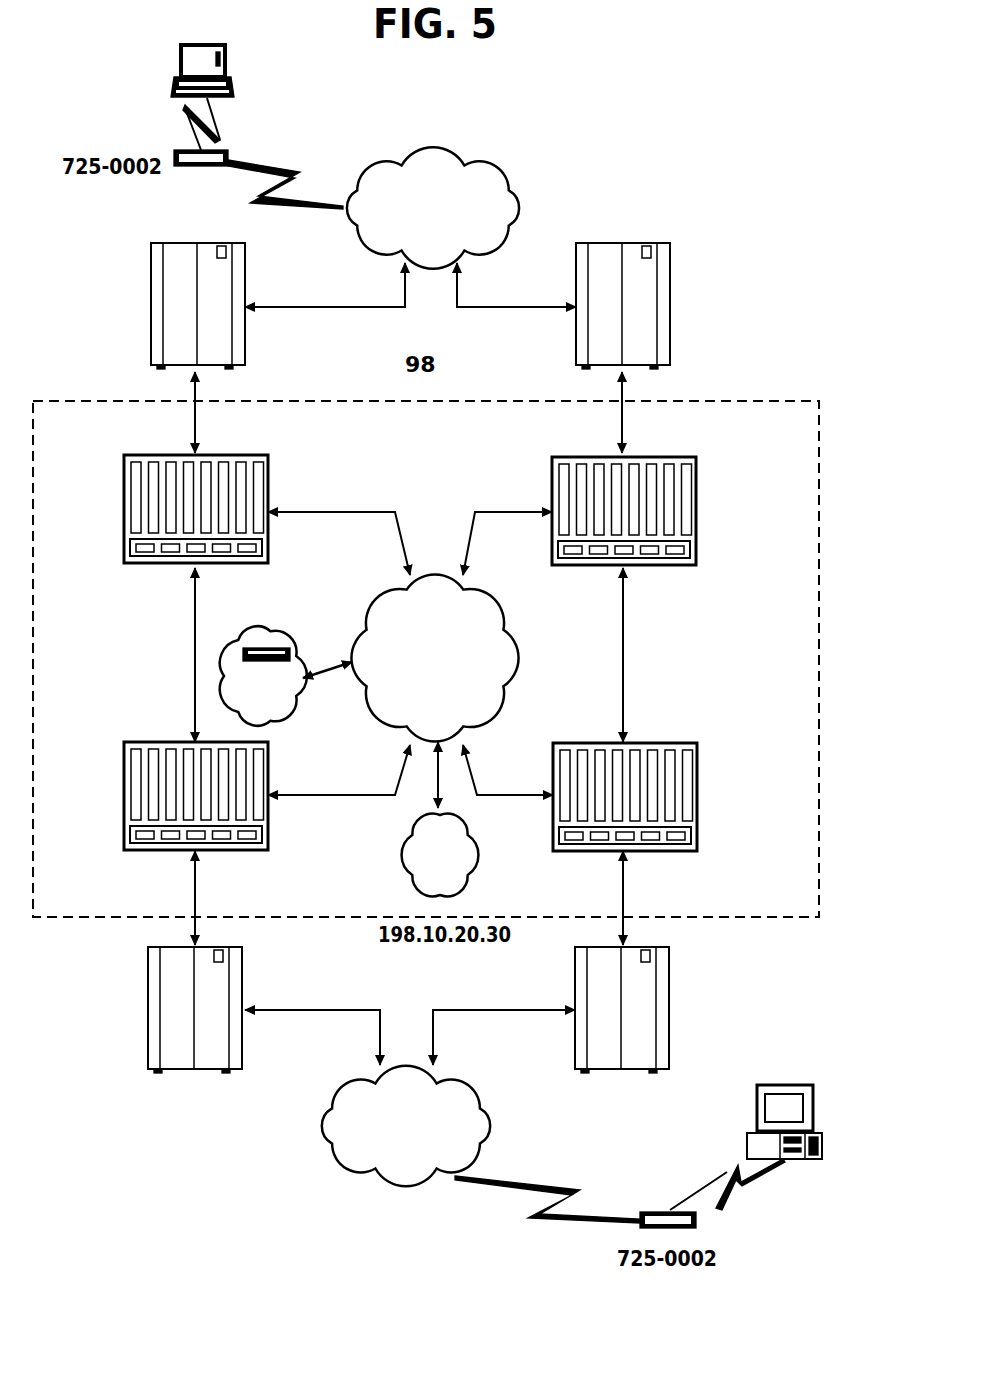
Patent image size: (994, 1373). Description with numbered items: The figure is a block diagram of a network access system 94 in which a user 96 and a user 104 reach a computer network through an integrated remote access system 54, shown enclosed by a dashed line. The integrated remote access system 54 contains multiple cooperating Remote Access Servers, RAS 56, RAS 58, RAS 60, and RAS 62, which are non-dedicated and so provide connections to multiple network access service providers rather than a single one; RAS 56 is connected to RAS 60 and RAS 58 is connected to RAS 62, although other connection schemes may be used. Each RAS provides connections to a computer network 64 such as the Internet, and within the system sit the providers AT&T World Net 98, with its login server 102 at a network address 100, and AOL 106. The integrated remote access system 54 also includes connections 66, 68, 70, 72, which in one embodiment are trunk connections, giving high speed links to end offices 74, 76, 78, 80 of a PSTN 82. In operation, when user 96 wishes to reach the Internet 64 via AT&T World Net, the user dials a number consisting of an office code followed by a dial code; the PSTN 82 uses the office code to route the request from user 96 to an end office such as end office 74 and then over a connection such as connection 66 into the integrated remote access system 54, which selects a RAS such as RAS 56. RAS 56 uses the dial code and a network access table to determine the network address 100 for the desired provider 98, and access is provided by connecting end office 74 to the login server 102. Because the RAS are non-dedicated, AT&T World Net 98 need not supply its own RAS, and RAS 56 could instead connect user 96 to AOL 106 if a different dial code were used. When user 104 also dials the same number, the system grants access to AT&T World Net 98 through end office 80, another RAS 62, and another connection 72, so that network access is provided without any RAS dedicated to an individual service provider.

The integrated remote access system 54 is at (819, 660).
The remote access server 56 is at (268, 528).
The remote access server 58 is at (695, 528).
The remote access server 60 is at (268, 832).
The remote access server 62 is at (695, 832).
The computer network 64 is at (517, 658).
The connection 66 is at (198, 412).
The connection 68 is at (625, 412).
The connection 70 is at (198, 898).
The connection 72 is at (626, 900).
The end office 74 is at (245, 335).
The end office 76 is at (669, 308).
The end office 78 is at (242, 1037).
The end office 80 is at (669, 1007).
The PSTN 82 is at (523, 208).
The network access system 94 is at (825, 333).
The user 96 is at (225, 72).
The AT&T World Net 98 is at (280, 713).
The network address 100 is at (324, 604).
The login server 102 is at (268, 648).
The user 104 is at (745, 1138).
The AOL 106 is at (478, 855).